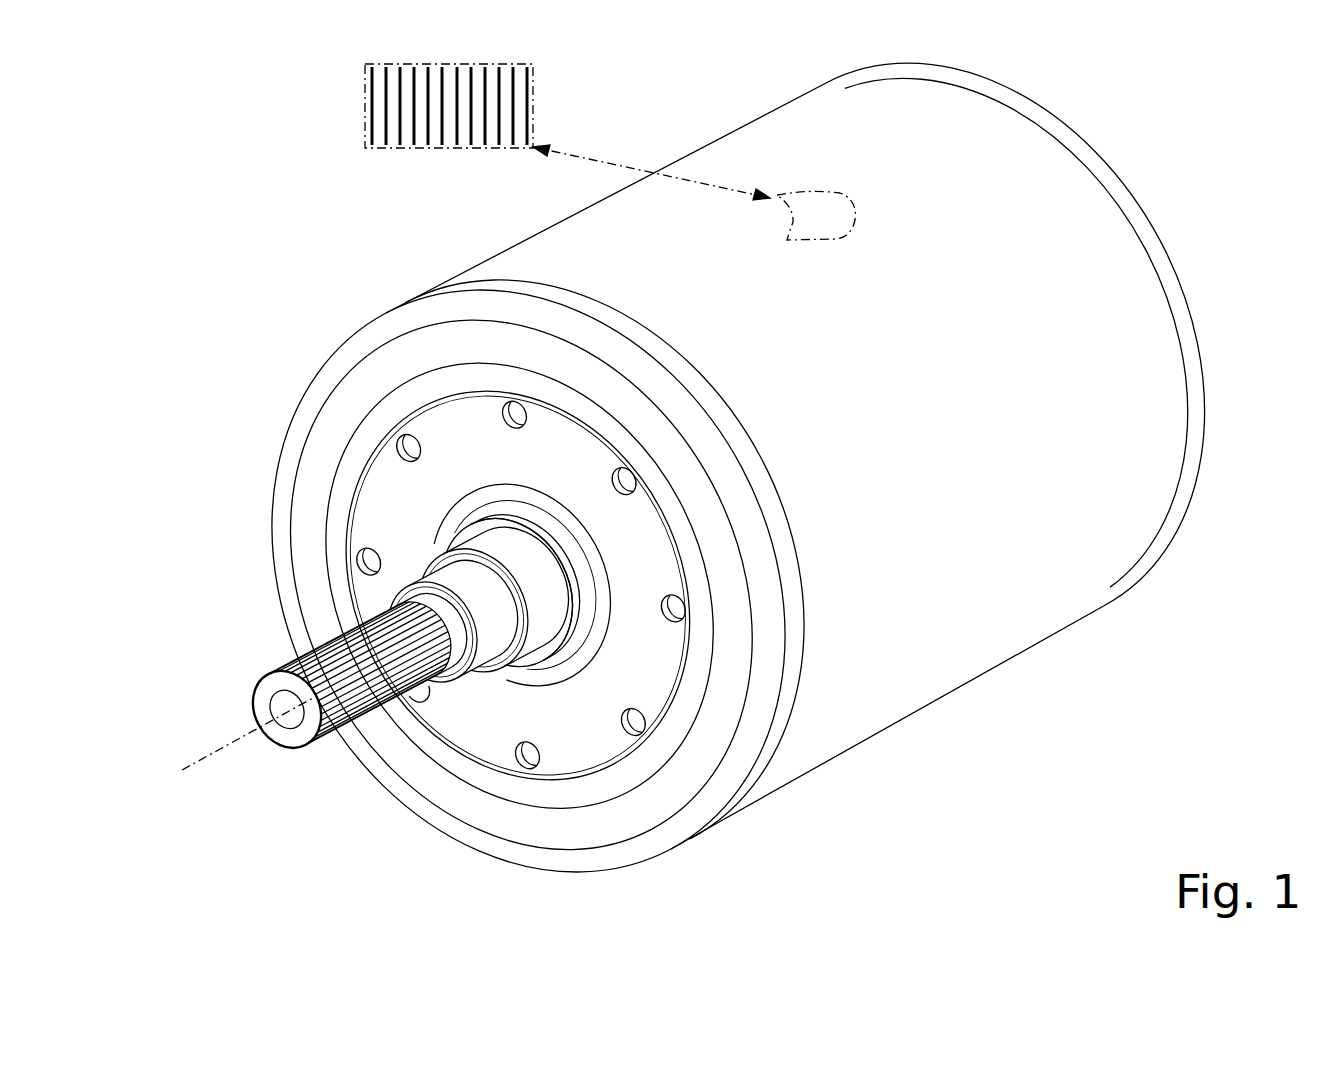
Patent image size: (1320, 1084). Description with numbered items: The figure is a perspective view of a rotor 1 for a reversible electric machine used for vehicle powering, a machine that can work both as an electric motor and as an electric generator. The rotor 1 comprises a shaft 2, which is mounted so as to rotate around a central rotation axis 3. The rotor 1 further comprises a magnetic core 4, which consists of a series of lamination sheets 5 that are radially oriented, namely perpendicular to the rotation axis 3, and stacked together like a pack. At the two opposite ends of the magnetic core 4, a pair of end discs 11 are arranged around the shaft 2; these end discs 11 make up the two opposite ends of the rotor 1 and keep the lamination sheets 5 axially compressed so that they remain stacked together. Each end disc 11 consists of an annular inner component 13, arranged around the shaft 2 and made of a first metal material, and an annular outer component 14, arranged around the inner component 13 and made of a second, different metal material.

The rotor 1 is at (215, 863).
The shaft 2 is at (327, 752).
The rotation axis 3 is at (211, 748).
The magnetic core 4 is at (332, 99).
The lamination sheets 5 is at (407, 120).
The end discs 11 is at (236, 451).
The inner component 13 is at (581, 730).
The outer component 14 is at (360, 378).